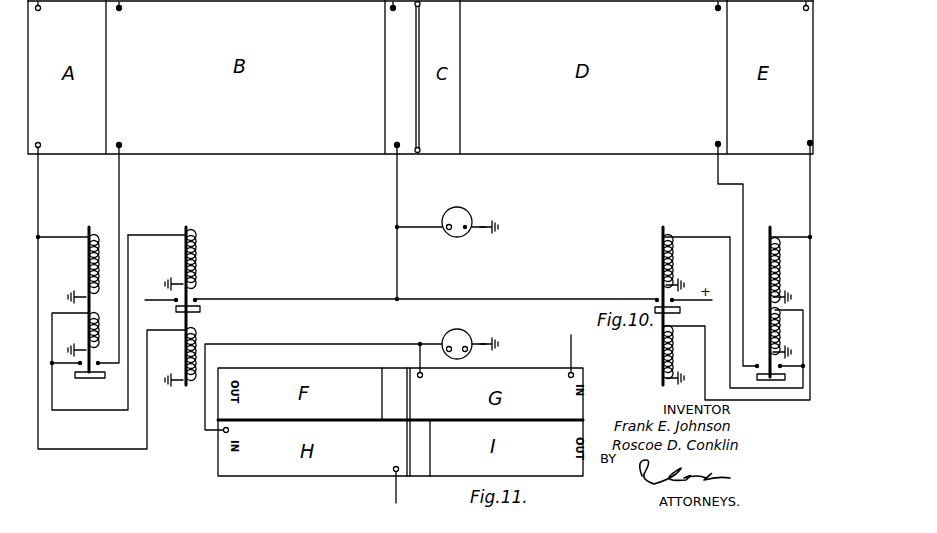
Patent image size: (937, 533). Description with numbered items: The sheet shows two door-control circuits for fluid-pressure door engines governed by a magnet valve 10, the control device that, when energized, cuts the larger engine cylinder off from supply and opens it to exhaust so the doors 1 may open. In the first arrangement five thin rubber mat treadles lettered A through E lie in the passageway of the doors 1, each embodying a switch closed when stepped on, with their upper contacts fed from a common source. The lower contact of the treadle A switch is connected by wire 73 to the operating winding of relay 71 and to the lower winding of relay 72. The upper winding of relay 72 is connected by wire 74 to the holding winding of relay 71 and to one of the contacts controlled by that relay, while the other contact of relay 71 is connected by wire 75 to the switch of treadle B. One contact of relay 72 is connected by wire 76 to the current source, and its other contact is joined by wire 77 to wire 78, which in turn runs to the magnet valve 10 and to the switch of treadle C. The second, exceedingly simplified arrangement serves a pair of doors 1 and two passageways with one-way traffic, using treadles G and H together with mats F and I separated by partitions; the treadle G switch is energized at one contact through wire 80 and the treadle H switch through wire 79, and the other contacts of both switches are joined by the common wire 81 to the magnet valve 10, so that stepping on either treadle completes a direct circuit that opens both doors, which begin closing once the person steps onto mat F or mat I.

In FIG. 10, the doors 1 is at (431, 100).
In FIG. 11, the doors 1 is at (346, 422).
In FIG. 10, the magnet valve 10 is at (466, 214).
In FIG. 11, the magnet valve 10 is at (466, 336).
In FIG. 10, the relay 71 is at (84, 218).
In FIG. 10, the relay 72 is at (192, 227).
In FIG. 10, the wire 73 is at (78, 451).
In FIG. 10, the wire 74 is at (103, 412).
In FIG. 10, the wire 75 is at (120, 193).
In FIG. 10, the wire 76 is at (150, 302).
In FIG. 10, the wire 77 is at (337, 300).
In FIG. 10, the wire 78 is at (398, 257).
In FIG. 11, the wire 79 is at (398, 495).
In FIG. 11, the wire 80 is at (573, 353).
In FIG. 11, the common wire 81 is at (342, 338).